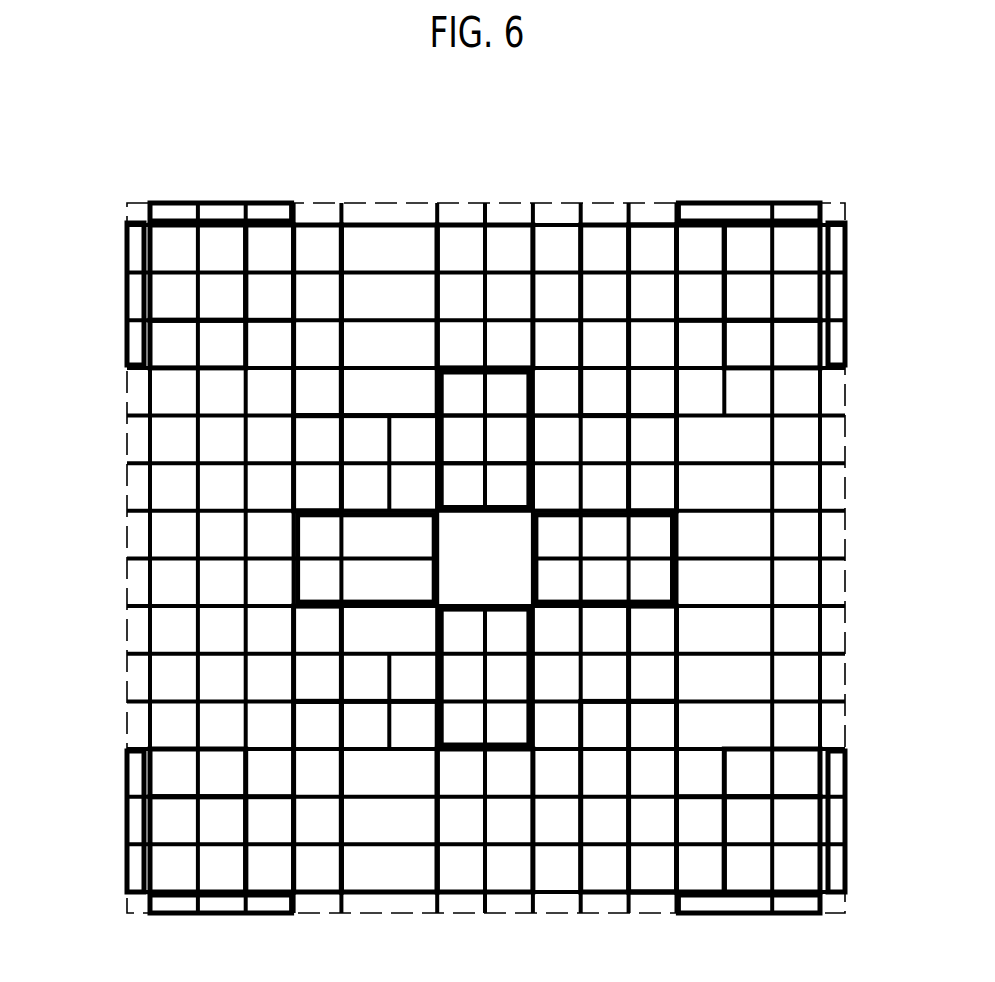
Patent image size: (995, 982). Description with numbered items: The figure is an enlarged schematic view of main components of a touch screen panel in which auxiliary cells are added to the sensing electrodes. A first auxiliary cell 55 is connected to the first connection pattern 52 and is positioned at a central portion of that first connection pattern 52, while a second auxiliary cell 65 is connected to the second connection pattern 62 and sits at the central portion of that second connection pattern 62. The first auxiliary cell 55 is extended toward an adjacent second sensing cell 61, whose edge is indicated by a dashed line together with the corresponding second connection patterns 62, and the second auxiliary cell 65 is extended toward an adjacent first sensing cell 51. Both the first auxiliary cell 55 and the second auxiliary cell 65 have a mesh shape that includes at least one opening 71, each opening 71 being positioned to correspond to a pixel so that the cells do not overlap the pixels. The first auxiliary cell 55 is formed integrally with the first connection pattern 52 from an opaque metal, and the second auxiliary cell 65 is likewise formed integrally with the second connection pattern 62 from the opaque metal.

The first sensing cell 51 is at (143, 346).
The first connection pattern 52 is at (410, 460).
The first auxiliary cell 55 is at (507, 370).
The second sensing cell 61 is at (727, 248).
The second connection pattern 62 is at (390, 498).
The second auxiliary cell 65 is at (297, 578).
The opening 71 is at (466, 397).